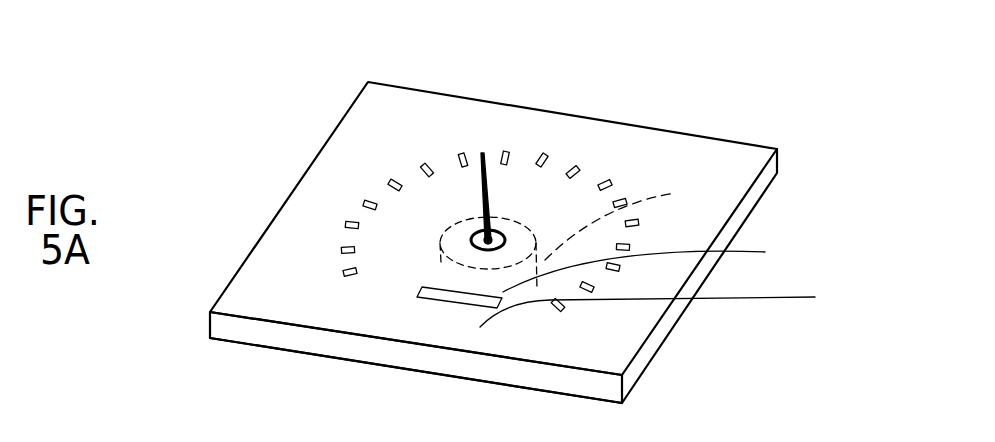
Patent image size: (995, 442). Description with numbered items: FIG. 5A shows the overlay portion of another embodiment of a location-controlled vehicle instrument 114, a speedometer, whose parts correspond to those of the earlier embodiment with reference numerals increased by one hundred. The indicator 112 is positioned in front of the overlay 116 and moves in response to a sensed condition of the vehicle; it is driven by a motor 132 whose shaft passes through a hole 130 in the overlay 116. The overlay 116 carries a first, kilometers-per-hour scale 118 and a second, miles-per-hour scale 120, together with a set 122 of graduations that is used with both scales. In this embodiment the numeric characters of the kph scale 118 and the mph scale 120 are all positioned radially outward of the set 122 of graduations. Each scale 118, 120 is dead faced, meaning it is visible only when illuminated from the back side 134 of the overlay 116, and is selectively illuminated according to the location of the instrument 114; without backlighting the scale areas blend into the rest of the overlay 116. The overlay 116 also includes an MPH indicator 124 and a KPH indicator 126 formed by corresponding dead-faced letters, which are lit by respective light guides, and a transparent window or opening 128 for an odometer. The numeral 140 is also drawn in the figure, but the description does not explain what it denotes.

The indicator 112 is at (485, 158).
The instrument 114 is at (604, 90).
The overlay 116 is at (414, 106).
The kilometers-per-hour scale 118 is at (314, 198).
The miles-per-hour scale 120 is at (300, 231).
The set of graduations 122 is at (354, 284).
The MPH indicator 124 is at (668, 264).
The KPH indicator 126 is at (681, 305).
The window or opening 128 is at (423, 290).
The hole 130 is at (496, 234).
The motor 132 is at (645, 214).
The back side 134 is at (580, 400).
The housing 140 is at (322, 435).